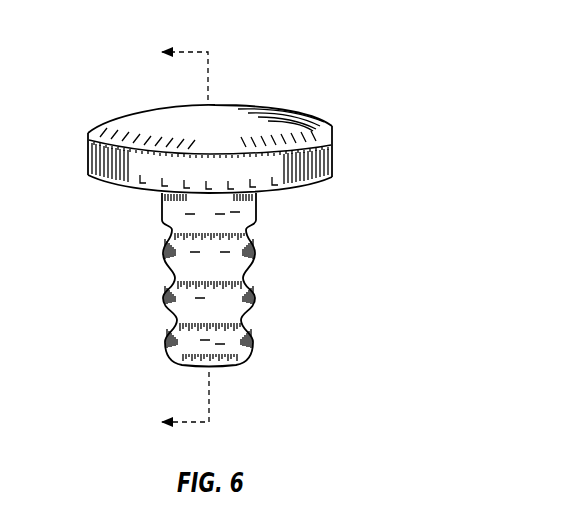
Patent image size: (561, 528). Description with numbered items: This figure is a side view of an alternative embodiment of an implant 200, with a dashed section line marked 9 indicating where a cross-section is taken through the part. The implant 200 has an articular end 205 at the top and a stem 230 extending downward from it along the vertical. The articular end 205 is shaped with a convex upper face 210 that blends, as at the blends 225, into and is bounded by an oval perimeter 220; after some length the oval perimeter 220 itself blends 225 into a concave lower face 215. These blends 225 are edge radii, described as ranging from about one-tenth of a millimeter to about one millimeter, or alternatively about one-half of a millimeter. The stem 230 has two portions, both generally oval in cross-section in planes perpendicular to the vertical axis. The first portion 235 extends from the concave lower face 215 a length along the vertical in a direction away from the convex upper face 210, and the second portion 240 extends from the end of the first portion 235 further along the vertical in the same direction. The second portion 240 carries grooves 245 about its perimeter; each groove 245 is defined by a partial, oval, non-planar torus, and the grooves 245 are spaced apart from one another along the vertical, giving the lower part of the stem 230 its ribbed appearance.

The implant 200 is at (253, 42).
The section line 9- 9 is at (175, 240).
The articular end 205 is at (85, 129).
The convex upper face 210 is at (281, 118).
The concave lower face 215 is at (297, 200).
The oval perimeter 220 is at (332, 155).
The blends 225 is at (336, 125).
The stem 230 is at (100, 195).
The first portion 235 is at (262, 208).
The second portion 240 is at (157, 215).
The grooves 245 is at (250, 279).